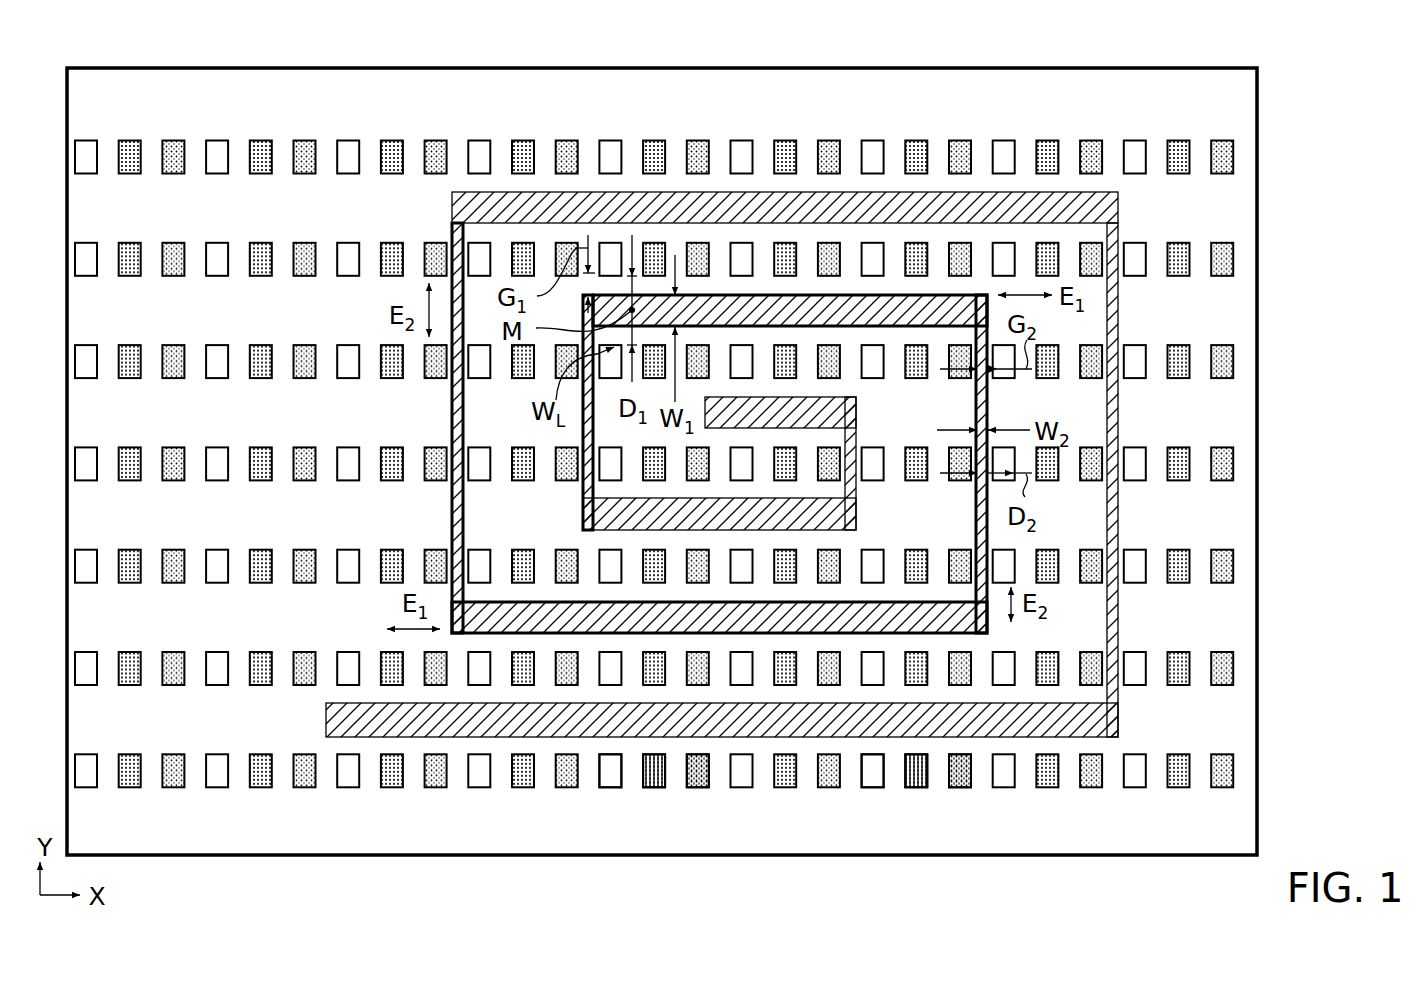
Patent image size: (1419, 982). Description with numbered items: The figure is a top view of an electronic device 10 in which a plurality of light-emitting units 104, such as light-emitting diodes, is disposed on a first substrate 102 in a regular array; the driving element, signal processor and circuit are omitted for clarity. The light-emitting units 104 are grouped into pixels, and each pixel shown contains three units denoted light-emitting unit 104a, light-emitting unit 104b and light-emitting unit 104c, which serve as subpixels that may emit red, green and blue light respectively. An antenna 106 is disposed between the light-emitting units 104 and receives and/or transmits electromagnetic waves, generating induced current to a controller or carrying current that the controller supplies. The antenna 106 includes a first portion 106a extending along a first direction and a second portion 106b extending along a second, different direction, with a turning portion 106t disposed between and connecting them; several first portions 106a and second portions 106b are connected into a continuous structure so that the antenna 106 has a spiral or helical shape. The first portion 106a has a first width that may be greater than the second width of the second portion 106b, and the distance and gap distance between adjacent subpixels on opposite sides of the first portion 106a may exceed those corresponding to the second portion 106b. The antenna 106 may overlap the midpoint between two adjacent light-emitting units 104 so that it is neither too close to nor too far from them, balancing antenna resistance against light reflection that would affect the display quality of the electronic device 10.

The electronic device 10 is at (33, 45).
The first substrate 102 is at (1232, 211).
The light-emitting units 104 is at (394, 773).
The light-emitting unit 104a is at (612, 773).
The light-emitting unit 104b is at (652, 773).
The light-emitting unit 104c is at (698, 773).
The antenna 106 is at (722, 377).
The first portion 106a is at (845, 300).
The second portion 106b is at (453, 401).
The turning portion 106t is at (975, 300).